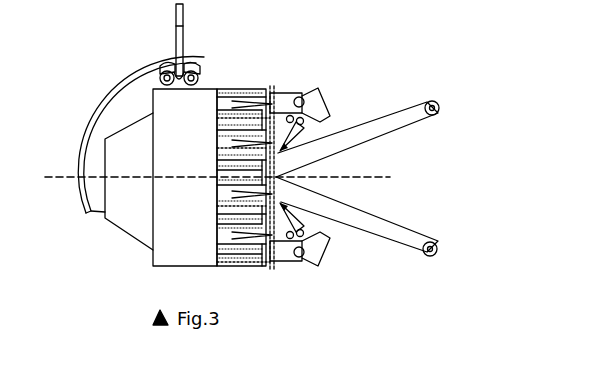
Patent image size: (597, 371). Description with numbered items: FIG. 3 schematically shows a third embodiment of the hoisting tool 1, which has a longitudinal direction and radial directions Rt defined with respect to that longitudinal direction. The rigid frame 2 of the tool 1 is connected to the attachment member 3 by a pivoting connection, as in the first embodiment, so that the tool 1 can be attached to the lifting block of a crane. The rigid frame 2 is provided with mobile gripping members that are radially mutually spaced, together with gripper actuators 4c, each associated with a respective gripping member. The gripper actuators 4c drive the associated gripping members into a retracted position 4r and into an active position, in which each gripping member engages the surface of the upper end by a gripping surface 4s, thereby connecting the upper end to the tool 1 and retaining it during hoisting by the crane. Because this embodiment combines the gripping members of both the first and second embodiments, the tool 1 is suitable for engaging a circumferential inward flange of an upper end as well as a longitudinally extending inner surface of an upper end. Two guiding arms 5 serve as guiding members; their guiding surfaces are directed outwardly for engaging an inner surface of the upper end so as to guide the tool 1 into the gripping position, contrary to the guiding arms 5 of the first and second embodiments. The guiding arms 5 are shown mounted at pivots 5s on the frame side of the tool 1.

The hoisting tool 1 is at (84, 34).
The rigid frame 2 is at (156, 252).
The attachment member 3 is at (182, 15).
The gripping surface 4s is at (223, 95).
The retracted position 4r is at (231, 95).
The gripper actuator 4c is at (307, 138).
The guiding arm 5 is at (390, 125).
The arm pivot 5s is at (431, 100).
The radial direction Rt is at (62, 182).